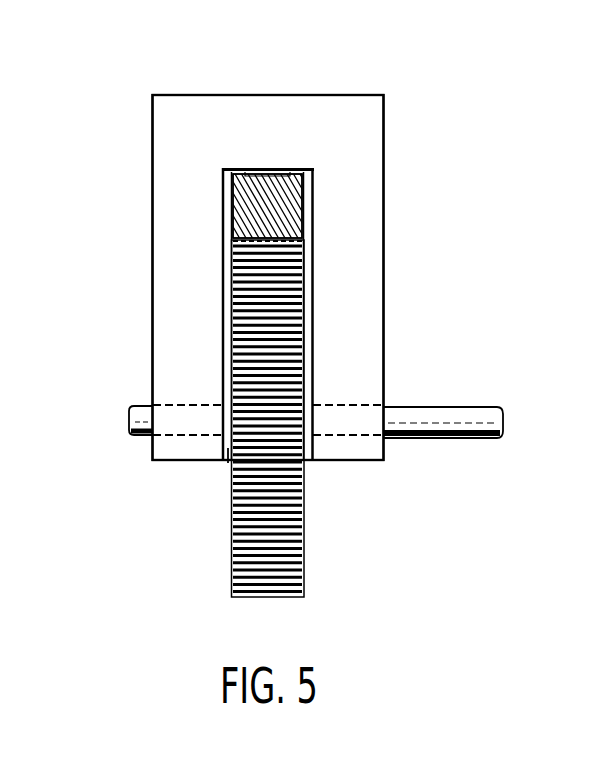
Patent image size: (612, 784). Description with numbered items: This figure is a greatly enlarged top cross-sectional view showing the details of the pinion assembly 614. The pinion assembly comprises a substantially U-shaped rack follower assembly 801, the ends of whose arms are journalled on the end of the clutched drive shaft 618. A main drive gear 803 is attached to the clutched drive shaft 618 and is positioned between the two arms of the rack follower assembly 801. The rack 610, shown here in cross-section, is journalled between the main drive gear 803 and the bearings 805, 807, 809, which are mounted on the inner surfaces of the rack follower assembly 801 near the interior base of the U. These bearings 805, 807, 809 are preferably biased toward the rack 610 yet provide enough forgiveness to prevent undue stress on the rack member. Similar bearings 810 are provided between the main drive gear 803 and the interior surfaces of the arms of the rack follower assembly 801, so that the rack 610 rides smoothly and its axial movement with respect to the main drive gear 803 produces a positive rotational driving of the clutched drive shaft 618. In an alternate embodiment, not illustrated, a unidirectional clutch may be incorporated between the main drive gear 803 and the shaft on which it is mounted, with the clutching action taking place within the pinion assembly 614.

The pinion assembly 614 is at (420, 170).
The rack follower assembly 801 is at (160, 287).
The main drive gear 803 is at (288, 498).
The bearing 805 is at (267, 175).
The bearing 807 is at (305, 213).
The bearing 809 is at (231, 215).
The rack 610 is at (238, 188).
The bearings 810 is at (226, 462).
The clutched drive shaft 618 is at (438, 440).